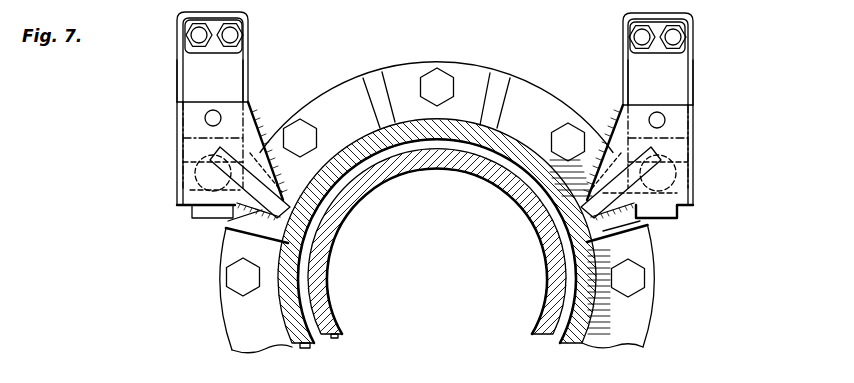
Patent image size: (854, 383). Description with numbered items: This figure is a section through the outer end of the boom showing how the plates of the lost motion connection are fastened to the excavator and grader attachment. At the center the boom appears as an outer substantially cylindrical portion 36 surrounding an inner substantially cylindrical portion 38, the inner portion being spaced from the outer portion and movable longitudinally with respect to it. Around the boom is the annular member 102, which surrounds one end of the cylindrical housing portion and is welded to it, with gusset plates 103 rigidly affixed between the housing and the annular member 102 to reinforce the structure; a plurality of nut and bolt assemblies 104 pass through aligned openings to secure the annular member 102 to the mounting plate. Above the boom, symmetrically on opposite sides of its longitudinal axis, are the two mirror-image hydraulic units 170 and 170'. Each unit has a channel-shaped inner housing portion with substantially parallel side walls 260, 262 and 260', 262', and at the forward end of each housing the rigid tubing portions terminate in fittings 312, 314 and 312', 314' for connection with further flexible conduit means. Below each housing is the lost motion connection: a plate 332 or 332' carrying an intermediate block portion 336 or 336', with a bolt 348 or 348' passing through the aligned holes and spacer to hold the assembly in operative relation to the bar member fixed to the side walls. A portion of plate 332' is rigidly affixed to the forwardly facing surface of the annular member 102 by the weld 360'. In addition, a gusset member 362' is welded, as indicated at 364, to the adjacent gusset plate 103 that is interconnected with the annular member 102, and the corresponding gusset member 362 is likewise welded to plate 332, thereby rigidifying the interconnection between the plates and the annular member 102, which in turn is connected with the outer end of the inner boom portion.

The outer substantially cylindrical portion 36 is at (305, 342).
The inner substantially cylindrical portion 38 is at (336, 338).
The annular member 102 is at (636, 326).
The gusset plates 103 is at (250, 229).
The nut and bolt assemblies 104 is at (436, 92).
The hydraulic system unit 170 is at (170, 108).
The hydraulic system unit 170' is at (714, 109).
The side wall 260 is at (146, 83).
The side wall 260' is at (724, 75).
The side wall 262 is at (270, 80).
The side wall 262' is at (602, 73).
The fitting 312 is at (178, 51).
The fitting 312' is at (690, 36).
The fitting 314 is at (246, 30).
The fitting 314' is at (629, 30).
The plate 332 is at (200, 150).
The plate 332' is at (674, 149).
The intermediate block portion 336 is at (186, 223).
The intermediate block portion 336' is at (699, 200).
The bolt 348 is at (253, 108).
The bolt 348' is at (704, 114).
The weld 360' is at (605, 154).
The gusset member 362 is at (299, 192).
The gusset member 362' is at (663, 219).
The weld 364 is at (253, 214).